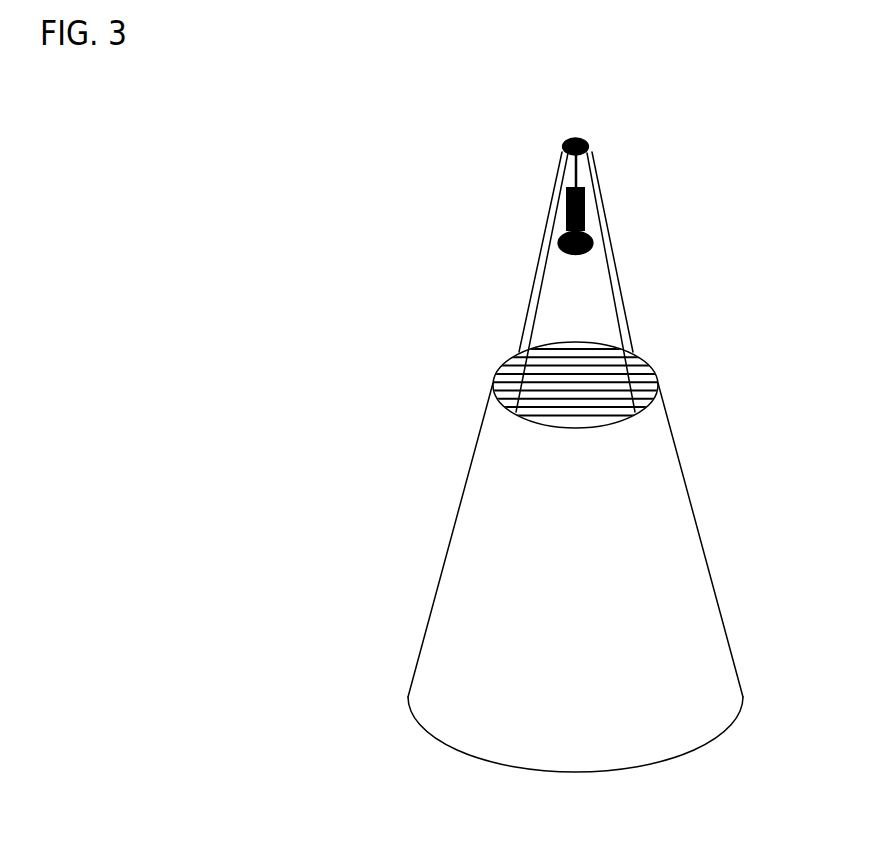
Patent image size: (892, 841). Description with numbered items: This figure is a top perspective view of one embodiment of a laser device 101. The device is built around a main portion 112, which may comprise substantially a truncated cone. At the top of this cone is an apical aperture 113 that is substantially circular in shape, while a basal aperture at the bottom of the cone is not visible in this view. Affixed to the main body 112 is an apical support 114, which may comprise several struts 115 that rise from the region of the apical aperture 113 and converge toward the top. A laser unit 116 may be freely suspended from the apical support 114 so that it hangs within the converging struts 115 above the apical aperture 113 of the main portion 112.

The laser device 101 is at (384, 140).
The main portion 112 is at (575, 577).
The apical aperture 113 is at (580, 394).
The apical support 114 is at (598, 142).
The struts 115 is at (520, 330).
The laser unit 116 is at (543, 185).